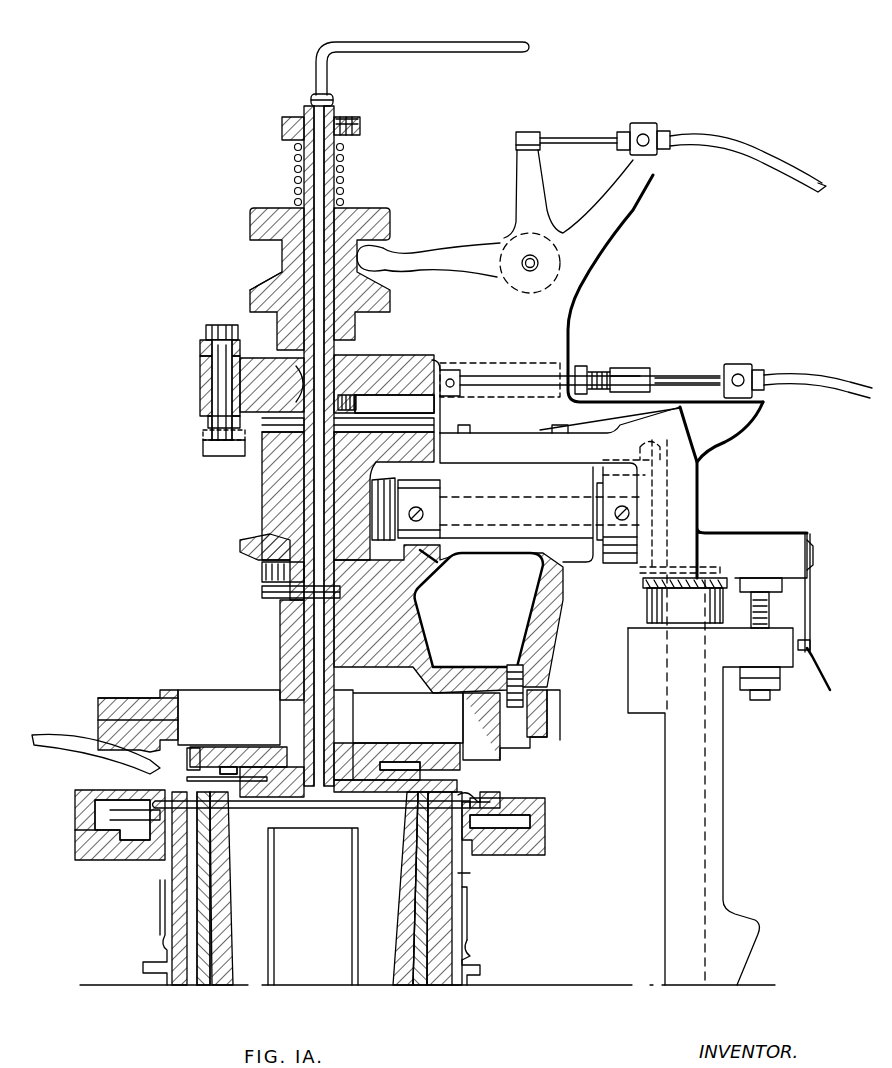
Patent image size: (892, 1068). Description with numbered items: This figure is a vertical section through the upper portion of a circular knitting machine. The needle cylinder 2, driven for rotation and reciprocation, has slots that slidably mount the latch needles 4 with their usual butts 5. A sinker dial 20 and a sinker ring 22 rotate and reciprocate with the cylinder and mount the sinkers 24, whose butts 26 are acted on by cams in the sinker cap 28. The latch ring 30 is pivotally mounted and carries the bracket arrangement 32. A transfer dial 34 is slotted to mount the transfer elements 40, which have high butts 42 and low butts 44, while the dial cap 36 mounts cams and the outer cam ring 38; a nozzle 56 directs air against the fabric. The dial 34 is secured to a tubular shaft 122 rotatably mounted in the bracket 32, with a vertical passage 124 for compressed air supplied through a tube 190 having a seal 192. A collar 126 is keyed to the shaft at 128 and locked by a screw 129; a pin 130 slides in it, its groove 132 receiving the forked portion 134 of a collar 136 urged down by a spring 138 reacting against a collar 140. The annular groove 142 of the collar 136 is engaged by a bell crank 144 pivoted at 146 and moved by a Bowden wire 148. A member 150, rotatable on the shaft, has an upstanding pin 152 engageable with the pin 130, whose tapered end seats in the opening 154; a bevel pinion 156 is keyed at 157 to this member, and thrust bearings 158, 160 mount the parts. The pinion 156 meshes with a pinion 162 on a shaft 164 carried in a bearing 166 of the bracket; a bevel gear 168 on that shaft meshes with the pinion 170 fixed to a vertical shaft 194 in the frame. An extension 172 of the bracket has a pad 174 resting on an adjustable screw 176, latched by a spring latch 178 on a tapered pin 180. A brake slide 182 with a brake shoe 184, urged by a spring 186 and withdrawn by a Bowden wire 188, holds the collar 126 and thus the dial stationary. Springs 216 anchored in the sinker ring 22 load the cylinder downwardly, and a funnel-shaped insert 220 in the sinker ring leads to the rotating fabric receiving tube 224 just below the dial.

The needle cylinder 2 is at (438, 981).
The latch needles 4 is at (460, 874).
The butts 5 is at (476, 967).
The sinker dial 20 is at (537, 852).
The sinker ring 22 is at (173, 854).
The sinkers 24 is at (545, 818).
The butts 26 is at (548, 800).
The sinker cap 28 is at (511, 798).
The latch ring 30 is at (108, 708).
The bracket arrangement 32 is at (401, 619).
The transfer dial 34 is at (215, 798).
The dial cap 36 is at (215, 749).
The outer cam ring 38 is at (193, 750).
The transfer elements 40 is at (196, 781).
The high butts 42 is at (233, 766).
The low butts 44 is at (402, 760).
The nozzle 56 is at (73, 741).
The shaft 122 is at (341, 718).
The vertical passage 124 is at (314, 249).
The collar 126 is at (200, 372).
The key 128 is at (296, 383).
The screw 129 is at (366, 390).
The pin 130 is at (216, 422).
The groove 132 is at (212, 344).
The forked portion 134 is at (206, 332).
The collar 136 is at (364, 212).
The spring 138 is at (345, 159).
The collar 140 is at (282, 130).
The annular groove 142 is at (260, 246).
The bell crank 144 is at (439, 252).
The pivot 146 is at (539, 265).
The Bowden wire 148 is at (584, 137).
The member 150 is at (280, 472).
The upstanding pin 152 is at (210, 438).
The opening 154 is at (210, 446).
The bevel pinion 156 is at (243, 550).
The key 157 is at (263, 573).
The thrust bearing 158 is at (263, 595).
The thrust bearing 160 is at (372, 426).
The pinion 162 is at (390, 498).
The shaft 164 is at (513, 496).
The bearing 166 is at (491, 544).
The bevel gear 168 is at (694, 466).
The pinion 170 is at (642, 584).
The extension 172 is at (746, 548).
The pad 174 is at (782, 588).
The adjustable screw 176 is at (750, 616).
The spring latch 178 is at (808, 636).
The tapered pin 180 is at (810, 652).
The slide 182 is at (451, 368).
The brake shoe 184 is at (425, 358).
The spring 186 is at (552, 362).
The Bowden wire 188 is at (709, 373).
The tube 190 is at (411, 48).
The seal 192 is at (328, 100).
The vertical shaft 194 is at (720, 762).
The springs 216 is at (200, 913).
The funnel-shaped insert 220 is at (219, 983).
The fabric receiving tube 224 is at (361, 850).